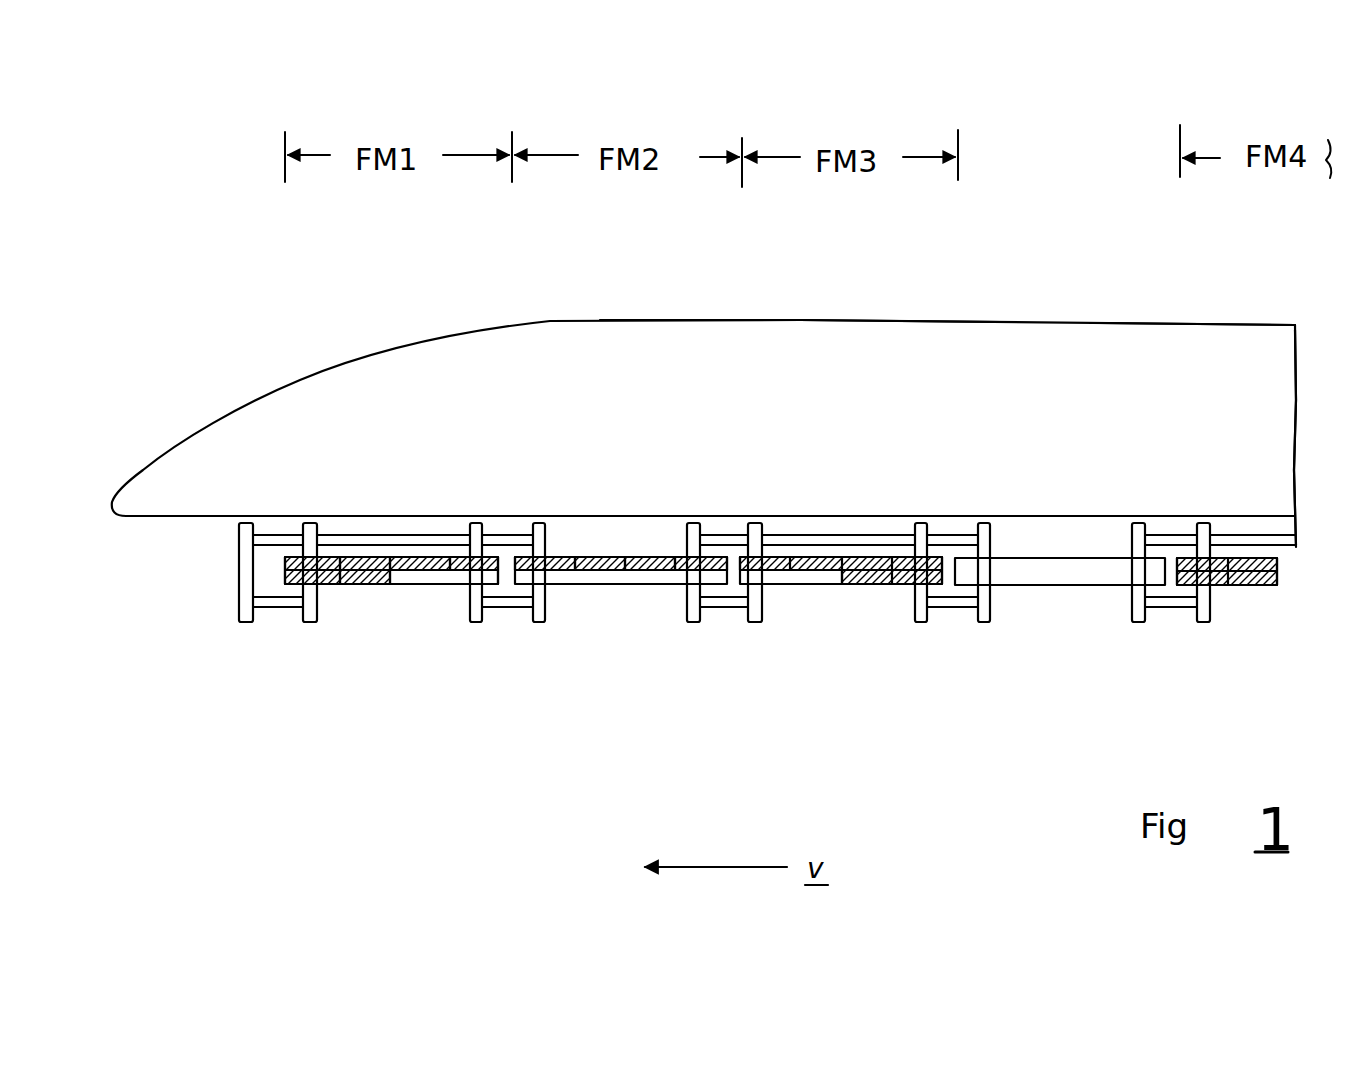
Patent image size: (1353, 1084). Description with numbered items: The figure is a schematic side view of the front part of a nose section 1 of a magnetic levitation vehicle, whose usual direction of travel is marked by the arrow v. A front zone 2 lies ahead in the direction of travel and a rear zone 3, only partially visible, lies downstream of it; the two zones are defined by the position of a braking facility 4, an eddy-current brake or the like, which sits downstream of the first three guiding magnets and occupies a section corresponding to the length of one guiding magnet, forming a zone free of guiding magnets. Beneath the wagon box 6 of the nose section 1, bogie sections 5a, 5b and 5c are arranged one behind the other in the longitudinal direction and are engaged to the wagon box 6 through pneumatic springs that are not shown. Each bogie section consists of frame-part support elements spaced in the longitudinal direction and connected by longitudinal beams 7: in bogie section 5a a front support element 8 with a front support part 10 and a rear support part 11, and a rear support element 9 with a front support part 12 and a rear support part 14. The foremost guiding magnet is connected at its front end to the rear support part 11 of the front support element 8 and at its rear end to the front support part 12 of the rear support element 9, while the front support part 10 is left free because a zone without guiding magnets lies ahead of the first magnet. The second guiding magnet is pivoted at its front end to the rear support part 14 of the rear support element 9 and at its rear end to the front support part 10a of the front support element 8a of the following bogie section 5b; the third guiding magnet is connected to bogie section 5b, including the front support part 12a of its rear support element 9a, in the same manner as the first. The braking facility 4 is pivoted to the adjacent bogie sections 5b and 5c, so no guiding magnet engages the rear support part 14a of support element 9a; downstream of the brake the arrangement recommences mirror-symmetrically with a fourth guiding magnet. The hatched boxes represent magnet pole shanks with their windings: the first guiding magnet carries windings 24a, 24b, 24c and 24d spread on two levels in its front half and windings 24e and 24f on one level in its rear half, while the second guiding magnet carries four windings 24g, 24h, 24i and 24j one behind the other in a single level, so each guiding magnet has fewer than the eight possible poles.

The nose section 1 is at (1017, 296).
The front zone 2 is at (797, 323).
The rear zone 3 is at (1266, 415).
The braking facility 4 is at (1055, 573).
The bogie section 5a is at (365, 563).
The bogie section 5b is at (826, 528).
The bogie section 5c is at (1247, 530).
The wagon box 6 is at (1163, 326).
The longitudinal beam 7 is at (432, 540).
The front support element 8 is at (269, 567).
The front support element 8a is at (730, 588).
The rear support element 9 is at (505, 588).
The rear support element 9a is at (945, 590).
The front support part 10 is at (243, 603).
The front support part 10a is at (692, 613).
The rear support part 11 is at (307, 617).
The front support part 12 is at (473, 615).
The front support part 12a is at (917, 614).
The rear support part 14 is at (540, 607).
The rear support part 14a is at (982, 602).
The winding 24a is at (318, 565).
The winding 24b is at (357, 528).
The winding 24c is at (310, 575).
The winding 24d is at (367, 577).
The winding 24e is at (409, 567).
The winding 24f is at (467, 567).
The winding 24g is at (535, 563).
The winding 24h is at (605, 563).
The winding 24i is at (650, 563).
The winding 24j is at (707, 563).